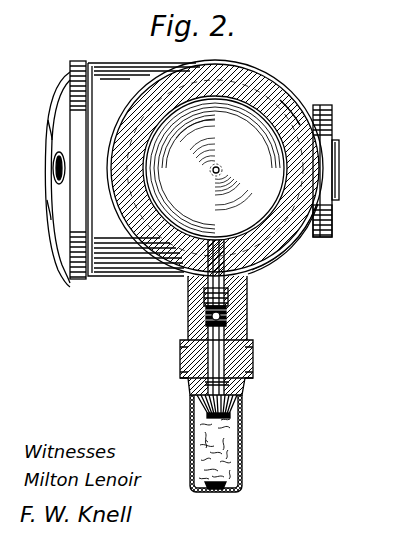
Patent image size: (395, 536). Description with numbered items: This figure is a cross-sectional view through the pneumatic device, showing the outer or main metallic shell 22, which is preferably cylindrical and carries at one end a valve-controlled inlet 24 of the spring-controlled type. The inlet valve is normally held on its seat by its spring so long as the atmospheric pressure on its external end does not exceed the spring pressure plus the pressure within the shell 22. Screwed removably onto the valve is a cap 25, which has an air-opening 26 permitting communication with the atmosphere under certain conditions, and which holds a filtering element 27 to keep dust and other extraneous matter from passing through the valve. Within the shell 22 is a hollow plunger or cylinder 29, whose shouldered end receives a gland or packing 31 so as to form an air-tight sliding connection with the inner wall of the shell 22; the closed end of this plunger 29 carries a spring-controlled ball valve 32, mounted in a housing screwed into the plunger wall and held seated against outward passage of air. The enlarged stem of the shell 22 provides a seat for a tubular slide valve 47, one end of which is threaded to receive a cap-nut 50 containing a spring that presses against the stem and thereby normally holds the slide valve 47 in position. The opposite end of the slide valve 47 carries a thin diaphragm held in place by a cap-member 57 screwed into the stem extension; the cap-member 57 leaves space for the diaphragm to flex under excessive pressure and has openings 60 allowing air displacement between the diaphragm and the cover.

The outer or main metallic shell 22 is at (262, 266).
The valve-controlled inlet 24 is at (208, 283).
The cap 25 is at (240, 470).
The air-opening 26 is at (222, 486).
The filtering element 27 is at (240, 433).
The hollow plunger or cylinder 29 is at (243, 130).
The gland or packing 31 is at (280, 102).
The spring-controlled ball valve 32 is at (150, 95).
The tubular slide valve 47 is at (339, 190).
The cap-nut 50 is at (330, 234).
The cap-member 57 is at (76, 282).
The openings 60 is at (56, 155).